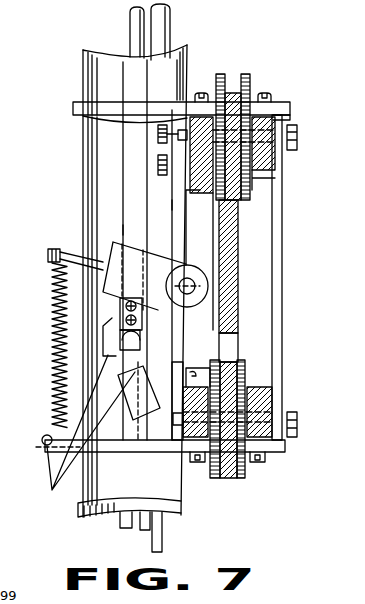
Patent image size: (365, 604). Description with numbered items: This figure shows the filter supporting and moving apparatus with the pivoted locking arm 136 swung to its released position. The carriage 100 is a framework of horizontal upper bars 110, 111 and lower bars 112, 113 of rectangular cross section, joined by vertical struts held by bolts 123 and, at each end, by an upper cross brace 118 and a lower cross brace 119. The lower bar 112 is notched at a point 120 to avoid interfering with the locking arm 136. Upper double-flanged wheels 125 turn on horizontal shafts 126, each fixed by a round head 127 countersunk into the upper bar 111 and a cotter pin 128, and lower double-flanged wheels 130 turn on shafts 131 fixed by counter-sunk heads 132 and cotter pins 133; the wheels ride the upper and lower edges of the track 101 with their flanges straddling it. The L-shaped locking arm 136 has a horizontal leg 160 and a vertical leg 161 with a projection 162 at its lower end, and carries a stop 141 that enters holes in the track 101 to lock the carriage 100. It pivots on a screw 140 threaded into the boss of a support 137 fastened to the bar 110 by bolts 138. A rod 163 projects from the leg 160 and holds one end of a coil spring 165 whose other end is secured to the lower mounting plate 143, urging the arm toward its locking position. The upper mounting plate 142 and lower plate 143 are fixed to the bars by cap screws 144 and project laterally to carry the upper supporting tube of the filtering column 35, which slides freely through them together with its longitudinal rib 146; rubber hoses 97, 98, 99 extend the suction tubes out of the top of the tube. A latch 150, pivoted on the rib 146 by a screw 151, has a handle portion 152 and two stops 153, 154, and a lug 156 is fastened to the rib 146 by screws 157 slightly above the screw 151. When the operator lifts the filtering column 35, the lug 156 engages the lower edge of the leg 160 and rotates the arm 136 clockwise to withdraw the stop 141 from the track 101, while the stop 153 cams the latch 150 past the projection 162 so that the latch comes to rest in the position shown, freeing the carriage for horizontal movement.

The filtering column 35 is at (197, 70).
The rubber hose 97 is at (126, 520).
The rubber hose 98 is at (145, 528).
The rubber hose 99 is at (162, 541).
The carriage 100 is at (290, 271).
The track 101 is at (236, 320).
The upper bar 110 is at (209, 195).
The upper bar 111 is at (270, 160).
The lower bar 112 is at (186, 456).
The lower bar 113 is at (285, 444).
The upper cross brace 118 is at (272, 178).
The lower cross brace 119 is at (272, 382).
The notch point 120 is at (193, 368).
The bolt 123 is at (297, 133).
The upper double-flanged wheel 125 is at (247, 82).
The horizontal shaft 126 is at (178, 140).
The round head 127 is at (285, 106).
The cotter pin 128 is at (160, 165).
The lower double-flanged wheel 130 is at (243, 479).
The shaft 131 is at (145, 452).
The counter-sunk head 132 is at (284, 395).
The cotter pin 133 is at (165, 447).
The pivoted locking arm 136 is at (199, 262).
The support 137 is at (172, 203).
The bolt 138 is at (158, 128).
The screw 140 is at (200, 276).
The stop 141 is at (233, 340).
The upper mounting plate 142 is at (73, 108).
The lower mounting plate 143 is at (42, 440).
The cap screw 144 is at (268, 97).
The rib 146 is at (123, 228).
The latch 150 is at (47, 462).
The screw 151 is at (141, 337).
The handle portion 152 is at (68, 470).
The stop 153 is at (130, 373).
The stop 154 is at (143, 305).
The lug 156 is at (126, 306).
The screw 157 is at (135, 300).
The horizontal leg 160 is at (107, 280).
The vertical leg 161 is at (216, 303).
The projection 162 is at (125, 440).
The rod 163 is at (48, 254).
The coil spring 165 is at (56, 330).